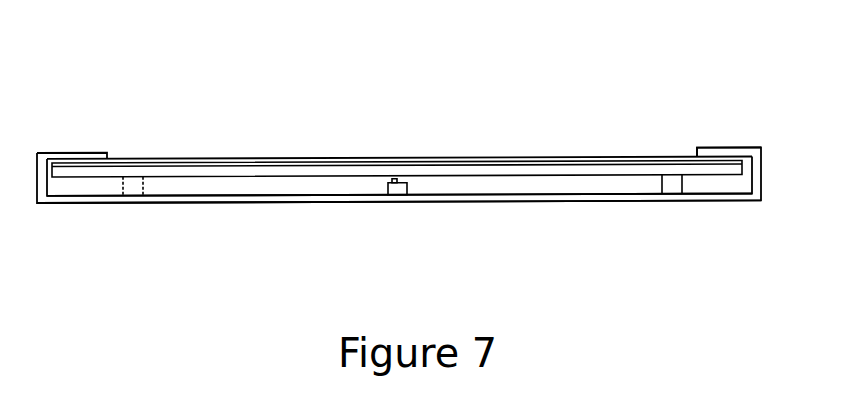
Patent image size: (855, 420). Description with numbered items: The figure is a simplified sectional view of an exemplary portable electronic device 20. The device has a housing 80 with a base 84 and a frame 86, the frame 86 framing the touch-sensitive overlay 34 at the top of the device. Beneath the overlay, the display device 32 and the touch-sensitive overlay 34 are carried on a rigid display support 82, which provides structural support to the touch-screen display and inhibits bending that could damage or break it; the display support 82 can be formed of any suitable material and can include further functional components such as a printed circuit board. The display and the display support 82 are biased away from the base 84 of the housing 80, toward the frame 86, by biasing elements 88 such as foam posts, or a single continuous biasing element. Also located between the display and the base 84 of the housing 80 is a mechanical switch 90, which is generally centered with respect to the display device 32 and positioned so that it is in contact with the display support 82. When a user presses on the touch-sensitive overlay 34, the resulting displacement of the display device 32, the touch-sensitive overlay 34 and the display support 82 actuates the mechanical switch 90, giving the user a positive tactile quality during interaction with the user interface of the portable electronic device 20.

The portable electronic device 20 is at (649, 70).
The display device 32 is at (387, 164).
The touch-sensitive overlay 34 is at (480, 158).
The housing 80 is at (758, 200).
The display support 82 is at (243, 173).
The base 84 is at (625, 195).
The frame 86 is at (724, 153).
The biasing elements 88 is at (672, 184).
The mechanical switch 90 is at (401, 190).